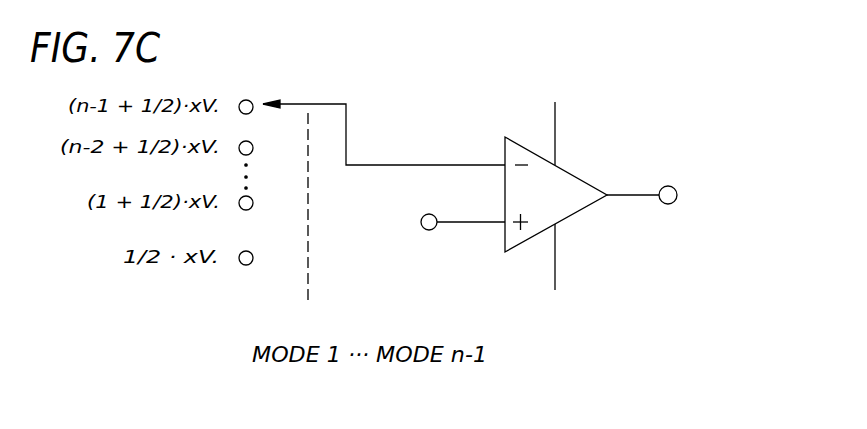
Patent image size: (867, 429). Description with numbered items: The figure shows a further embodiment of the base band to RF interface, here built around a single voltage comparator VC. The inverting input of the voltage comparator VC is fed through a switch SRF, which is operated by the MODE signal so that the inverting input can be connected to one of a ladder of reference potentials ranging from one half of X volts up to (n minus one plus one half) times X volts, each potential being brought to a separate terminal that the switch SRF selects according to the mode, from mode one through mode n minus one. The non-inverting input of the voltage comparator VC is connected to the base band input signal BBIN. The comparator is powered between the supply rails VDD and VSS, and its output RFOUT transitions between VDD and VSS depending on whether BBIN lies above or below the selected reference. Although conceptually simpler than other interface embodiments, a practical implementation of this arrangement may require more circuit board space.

The switch SRF is at (384, 118).
The voltage comparator VC is at (556, 194).
The element VDD is at (567, 115).
The element VSS is at (561, 278).
The BB_IN signal BBIN is at (458, 242).
The RF output RFOUT is at (680, 203).